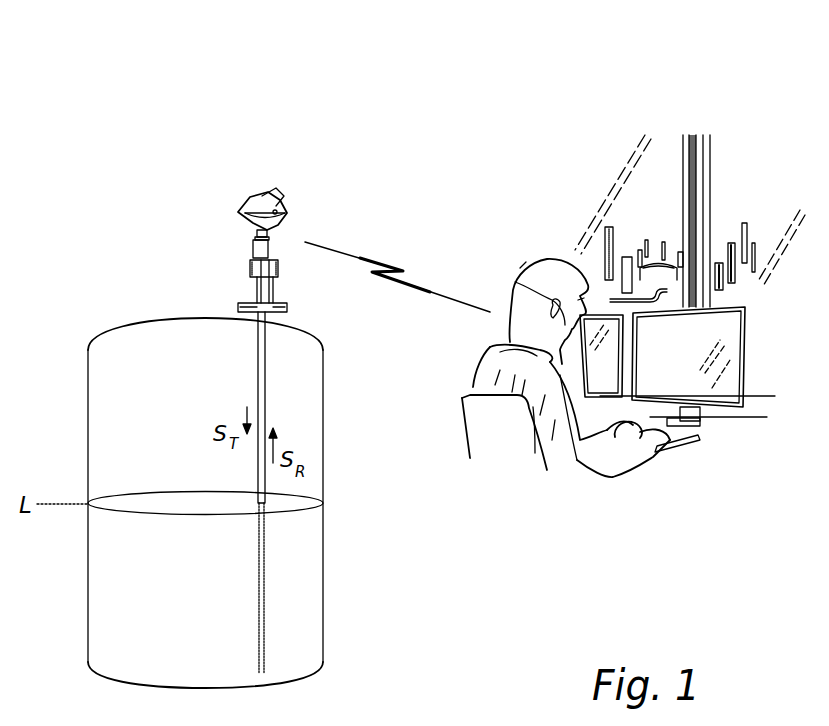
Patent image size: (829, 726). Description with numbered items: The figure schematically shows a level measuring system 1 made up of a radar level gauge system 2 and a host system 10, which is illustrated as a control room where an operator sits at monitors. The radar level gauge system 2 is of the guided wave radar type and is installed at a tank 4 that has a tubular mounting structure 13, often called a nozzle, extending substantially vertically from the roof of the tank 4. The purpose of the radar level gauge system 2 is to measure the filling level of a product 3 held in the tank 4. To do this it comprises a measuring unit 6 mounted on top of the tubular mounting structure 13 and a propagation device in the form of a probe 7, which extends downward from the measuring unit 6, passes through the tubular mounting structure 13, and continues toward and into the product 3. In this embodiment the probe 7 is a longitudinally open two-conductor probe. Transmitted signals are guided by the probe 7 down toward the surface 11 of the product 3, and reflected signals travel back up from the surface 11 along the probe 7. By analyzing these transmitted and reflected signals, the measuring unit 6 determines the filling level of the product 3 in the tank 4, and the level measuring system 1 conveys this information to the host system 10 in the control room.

The level measuring system 1 is at (480, 80).
The radar level gauge system 2 is at (220, 170).
The product 3 is at (183, 610).
The tank 4 is at (88, 443).
The measuring unit 6 is at (257, 193).
The probe 7 is at (250, 332).
The host system 10 is at (735, 190).
The surface 11 is at (172, 503).
The tubular mounting structure 13 is at (287, 317).